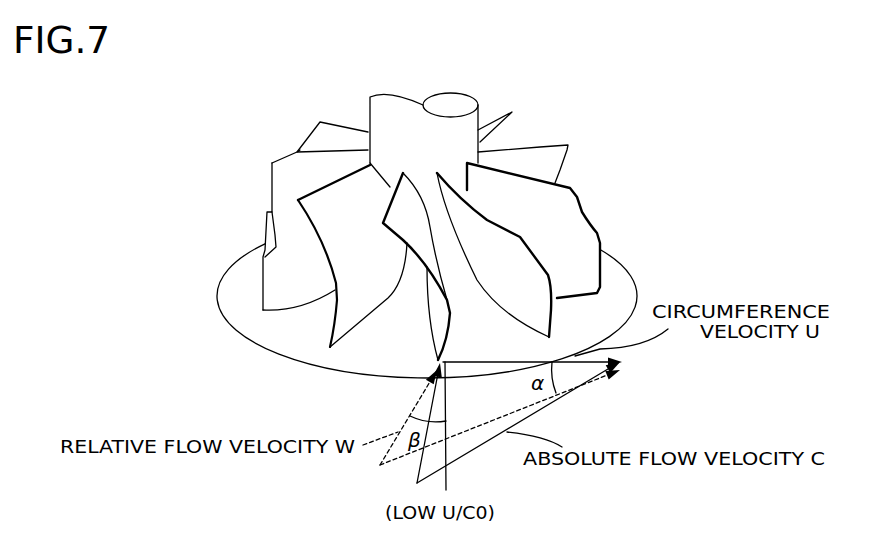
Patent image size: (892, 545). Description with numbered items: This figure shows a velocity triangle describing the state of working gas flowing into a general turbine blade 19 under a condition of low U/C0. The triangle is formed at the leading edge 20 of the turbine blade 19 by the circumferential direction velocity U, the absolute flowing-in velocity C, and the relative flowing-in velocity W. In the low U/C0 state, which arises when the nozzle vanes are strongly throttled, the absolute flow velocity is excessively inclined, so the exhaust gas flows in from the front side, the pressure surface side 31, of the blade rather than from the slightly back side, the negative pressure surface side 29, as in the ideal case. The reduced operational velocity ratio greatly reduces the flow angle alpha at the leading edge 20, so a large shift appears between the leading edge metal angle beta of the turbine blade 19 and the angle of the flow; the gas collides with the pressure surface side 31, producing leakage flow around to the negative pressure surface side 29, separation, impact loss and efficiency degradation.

The turbine blade 19 is at (570, 215).
The leading edge 20 is at (601, 266).
The negative pressure surface side 29 is at (427, 240).
The pressure surface side 31 is at (437, 313).